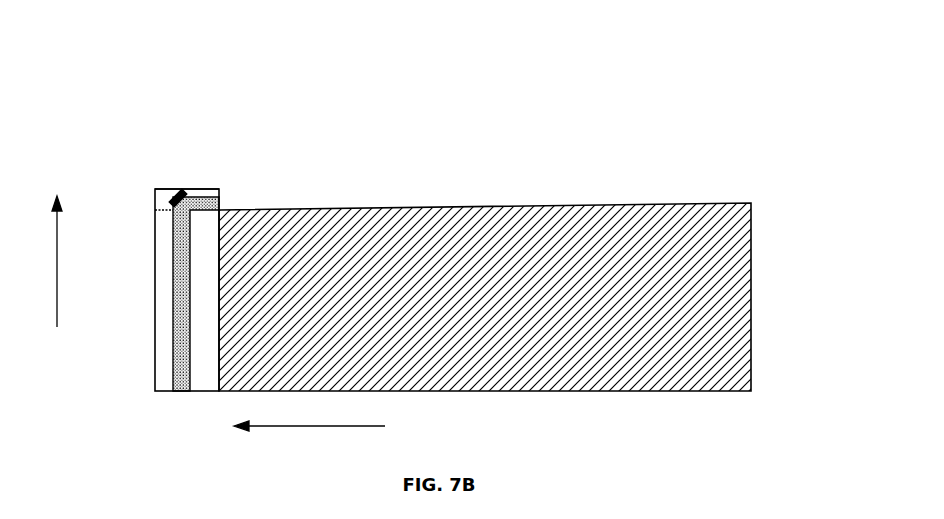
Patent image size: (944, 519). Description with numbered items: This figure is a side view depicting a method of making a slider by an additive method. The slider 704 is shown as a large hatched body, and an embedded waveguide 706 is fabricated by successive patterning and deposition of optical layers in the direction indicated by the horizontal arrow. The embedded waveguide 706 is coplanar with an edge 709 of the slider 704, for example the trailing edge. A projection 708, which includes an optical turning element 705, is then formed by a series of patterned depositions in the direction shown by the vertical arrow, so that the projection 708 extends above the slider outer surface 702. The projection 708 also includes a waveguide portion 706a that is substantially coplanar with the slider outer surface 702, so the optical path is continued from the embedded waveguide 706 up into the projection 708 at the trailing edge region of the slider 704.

The slider outer surface 702 is at (570, 204).
The slider 704 is at (697, 281).
The optical turning element 705 is at (173, 196).
The embedded waveguide 706 is at (168, 300).
The waveguide portion 706a is at (206, 200).
The projection 708 is at (183, 190).
The edge 709 is at (218, 359).